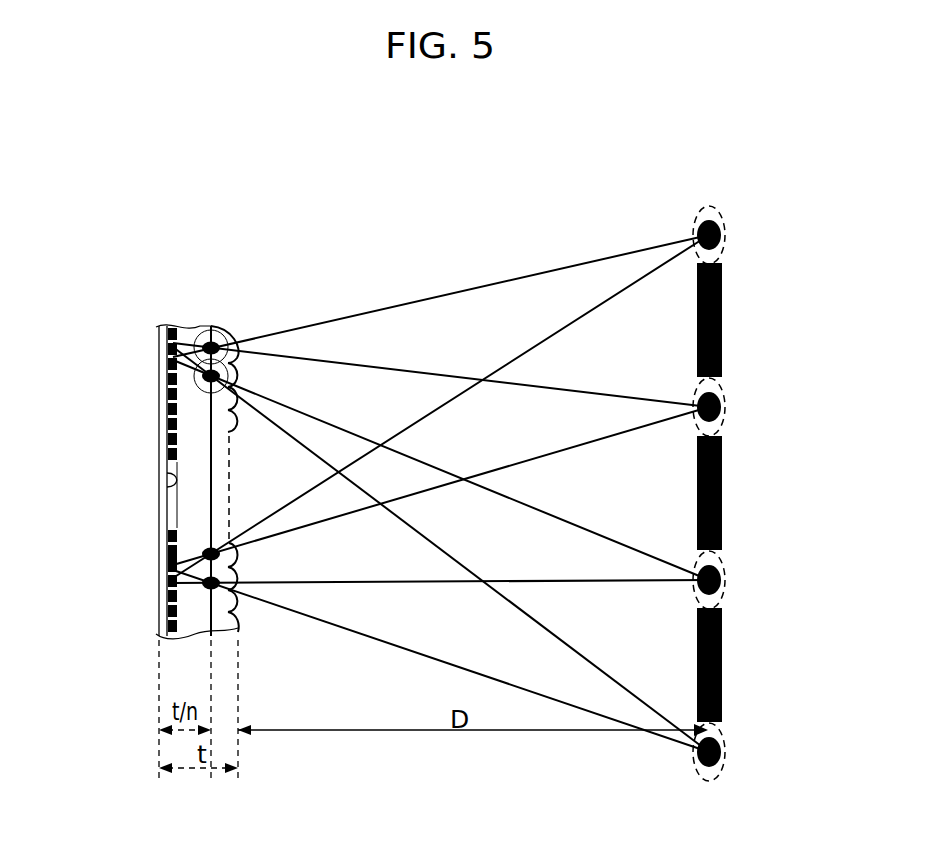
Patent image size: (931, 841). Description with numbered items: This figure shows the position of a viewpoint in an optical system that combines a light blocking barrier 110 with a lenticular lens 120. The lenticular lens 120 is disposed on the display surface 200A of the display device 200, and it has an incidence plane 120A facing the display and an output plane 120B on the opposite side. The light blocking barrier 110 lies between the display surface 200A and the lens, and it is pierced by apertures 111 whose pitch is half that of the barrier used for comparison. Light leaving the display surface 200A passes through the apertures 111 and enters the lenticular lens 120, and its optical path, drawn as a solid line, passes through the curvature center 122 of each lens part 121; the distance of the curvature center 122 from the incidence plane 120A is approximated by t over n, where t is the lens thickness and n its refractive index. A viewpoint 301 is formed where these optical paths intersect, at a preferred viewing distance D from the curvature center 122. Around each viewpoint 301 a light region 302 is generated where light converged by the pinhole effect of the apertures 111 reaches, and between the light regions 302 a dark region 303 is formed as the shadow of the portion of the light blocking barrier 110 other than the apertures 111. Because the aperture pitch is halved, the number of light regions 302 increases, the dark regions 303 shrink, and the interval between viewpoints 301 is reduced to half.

The light blocking barrier 110 is at (172, 367).
The apertures 111 is at (172, 557).
The display device 200 is at (160, 448).
The display surface 200A is at (168, 480).
The lenticular lens 120 is at (218, 455).
The incidence plane 120A is at (166, 513).
The output plane 120B is at (237, 432).
The lens part 121 is at (225, 410).
The curvature center 122 is at (211, 340).
The viewpoint 301 is at (722, 236).
The light region 302 is at (722, 252).
The dark region 303 is at (722, 328).